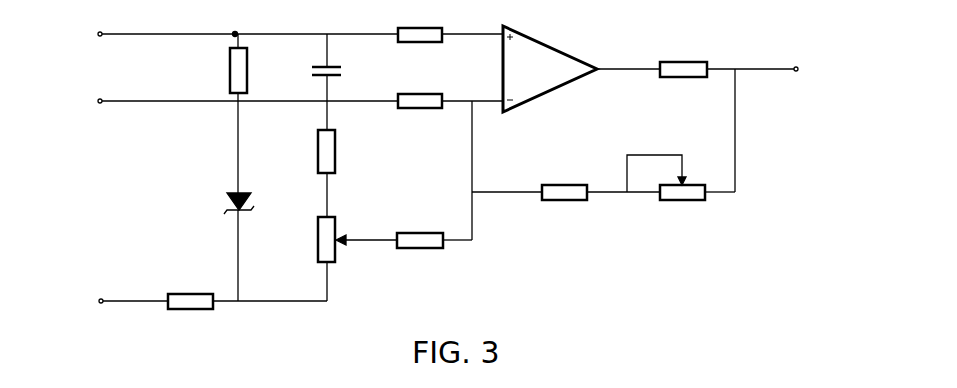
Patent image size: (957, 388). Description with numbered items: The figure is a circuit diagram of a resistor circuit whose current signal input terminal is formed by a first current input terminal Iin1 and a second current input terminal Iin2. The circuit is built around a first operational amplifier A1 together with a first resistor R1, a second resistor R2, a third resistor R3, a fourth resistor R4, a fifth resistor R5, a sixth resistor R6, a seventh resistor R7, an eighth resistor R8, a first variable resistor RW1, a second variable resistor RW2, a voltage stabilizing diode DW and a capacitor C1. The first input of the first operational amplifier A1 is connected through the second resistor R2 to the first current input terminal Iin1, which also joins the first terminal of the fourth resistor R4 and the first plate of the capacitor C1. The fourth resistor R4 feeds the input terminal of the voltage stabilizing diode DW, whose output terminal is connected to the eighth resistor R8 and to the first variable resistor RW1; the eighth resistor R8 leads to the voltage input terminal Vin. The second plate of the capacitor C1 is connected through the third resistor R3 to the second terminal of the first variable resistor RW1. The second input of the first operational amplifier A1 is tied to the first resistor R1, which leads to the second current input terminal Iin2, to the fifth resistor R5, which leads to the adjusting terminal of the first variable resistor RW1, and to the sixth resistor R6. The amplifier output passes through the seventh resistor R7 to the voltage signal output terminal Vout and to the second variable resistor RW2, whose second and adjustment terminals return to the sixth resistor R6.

The first resistor R1 is at (450, 89).
The second resistor R2 is at (450, 21).
The third resistor R3 is at (310, 173).
The fourth resistor R4 is at (222, 113).
The fifth resistor R5 is at (409, 174).
The sixth resistor R6 is at (566, 181).
The seventh resistor R7 is at (652, 58).
The eighth resistor R8 is at (190, 290).
The first variable resistor RW1 is at (279, 259).
The second variable resistor RW2 is at (681, 147).
The capacitor C1 is at (312, 82).
The voltage stabilizing diode DW is at (215, 247).
The first operational amplifier A1 is at (550, 69).
The first current input terminal Iin1 is at (222, 34).
The second current input terminal Iin2 is at (222, 101).
The voltage input terminal Vin is at (112, 301).
The voltage signal output terminal Vout is at (787, 69).